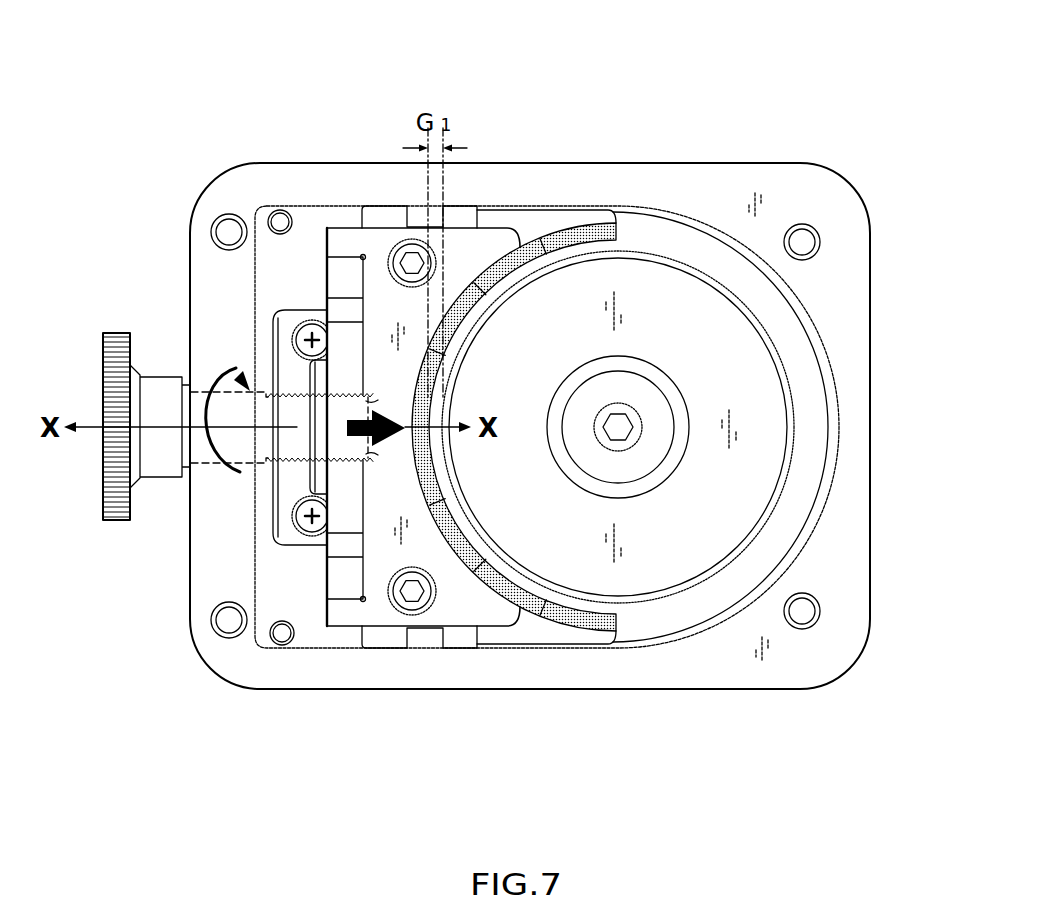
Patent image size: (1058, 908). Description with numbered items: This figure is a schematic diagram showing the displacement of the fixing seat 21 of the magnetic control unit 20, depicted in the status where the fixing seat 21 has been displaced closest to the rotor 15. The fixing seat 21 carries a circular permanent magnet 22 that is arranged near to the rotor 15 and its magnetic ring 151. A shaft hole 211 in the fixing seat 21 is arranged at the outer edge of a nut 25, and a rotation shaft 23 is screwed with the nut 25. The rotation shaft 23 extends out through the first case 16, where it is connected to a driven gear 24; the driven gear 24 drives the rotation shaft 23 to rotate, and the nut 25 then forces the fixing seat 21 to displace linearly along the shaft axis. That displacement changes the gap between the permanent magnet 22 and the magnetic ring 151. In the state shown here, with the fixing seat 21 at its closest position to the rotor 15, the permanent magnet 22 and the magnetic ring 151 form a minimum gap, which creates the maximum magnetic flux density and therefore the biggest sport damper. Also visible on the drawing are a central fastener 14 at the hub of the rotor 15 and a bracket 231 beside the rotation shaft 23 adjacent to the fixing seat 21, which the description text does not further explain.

The fastening screw 14 is at (632, 438).
The rotor 15 is at (678, 427).
The magnetic ring 151 is at (762, 332).
The first case 16 is at (345, 670).
The magnetic control unit 20 is at (628, 58).
The fixing seat 21 is at (463, 257).
The shaft hole 211 is at (355, 392).
The permanent magnet 22 is at (575, 238).
The rotation shaft 23 is at (160, 376).
The retaining bracket 231 is at (278, 396).
The driven gear 24 is at (117, 332).
The nut 25 is at (337, 340).